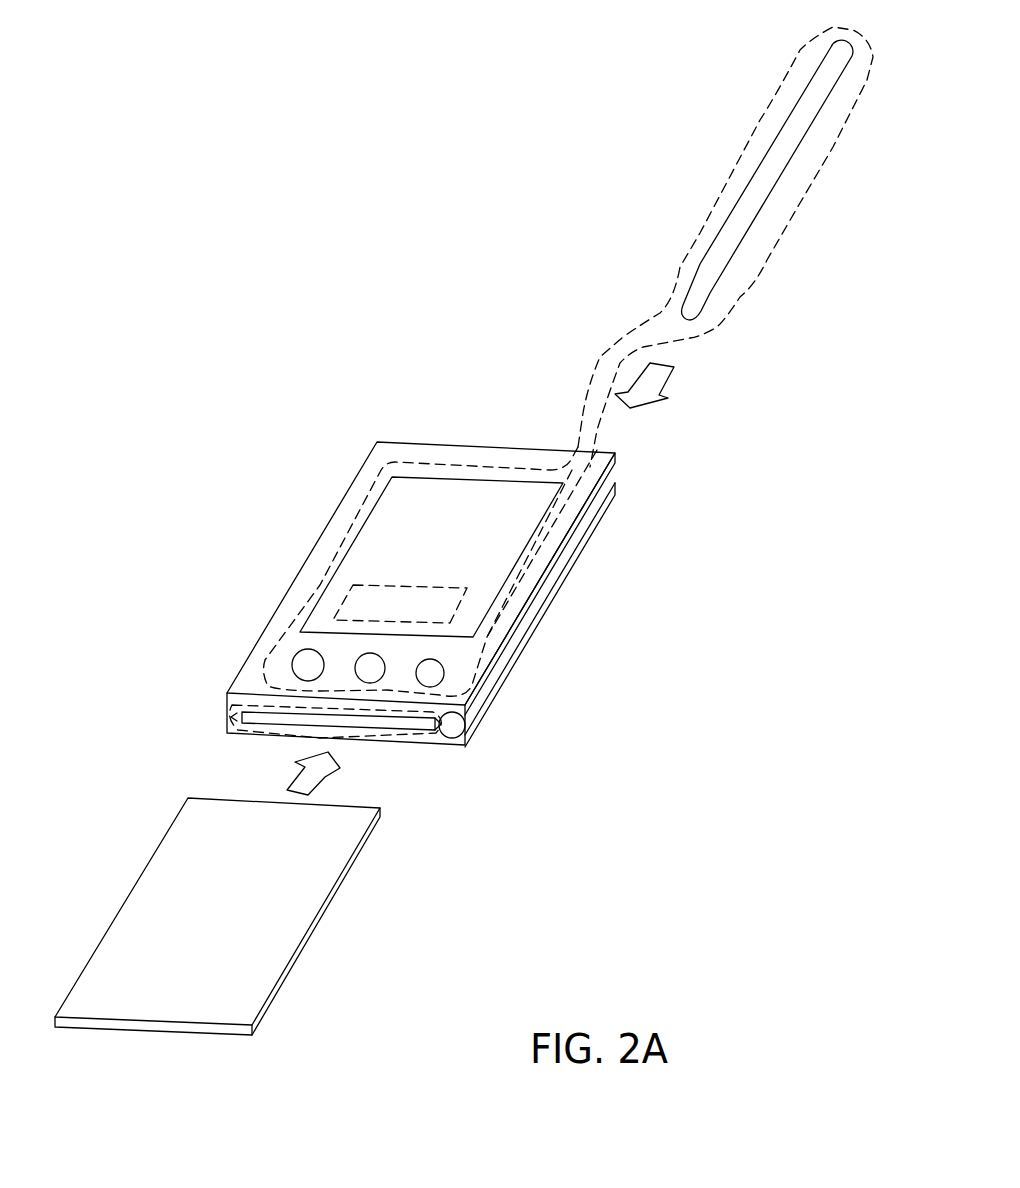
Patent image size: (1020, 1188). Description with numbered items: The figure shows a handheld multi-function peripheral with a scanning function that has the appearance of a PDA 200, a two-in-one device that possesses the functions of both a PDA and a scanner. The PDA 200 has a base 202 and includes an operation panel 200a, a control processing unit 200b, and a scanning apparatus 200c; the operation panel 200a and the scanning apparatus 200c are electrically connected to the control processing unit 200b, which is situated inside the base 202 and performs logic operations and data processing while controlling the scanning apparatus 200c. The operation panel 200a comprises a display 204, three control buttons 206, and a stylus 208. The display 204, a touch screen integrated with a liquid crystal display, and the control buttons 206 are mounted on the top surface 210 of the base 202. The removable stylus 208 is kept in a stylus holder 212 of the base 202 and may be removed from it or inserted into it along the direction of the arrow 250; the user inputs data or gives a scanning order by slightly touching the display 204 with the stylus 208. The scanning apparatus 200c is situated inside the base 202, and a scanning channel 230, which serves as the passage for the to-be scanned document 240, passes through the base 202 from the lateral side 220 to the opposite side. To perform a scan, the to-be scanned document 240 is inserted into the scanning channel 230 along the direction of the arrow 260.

The PDA 200 is at (375, 398).
The operation panel 200a is at (763, 127).
The control processing unit 200b is at (467, 595).
The scanning apparatus 200c is at (420, 750).
The base 202 is at (356, 477).
The display 204 is at (370, 557).
The control buttons 206 is at (300, 663).
The stylus 208 is at (770, 170).
The top surface 210 is at (528, 460).
The stylus holder 212 is at (462, 724).
The lateral side 220 is at (238, 702).
The scanning channel 230 is at (252, 716).
The to-be scanned document 240 is at (258, 958).
The arrow 250 is at (652, 380).
The arrow 260 is at (308, 780).